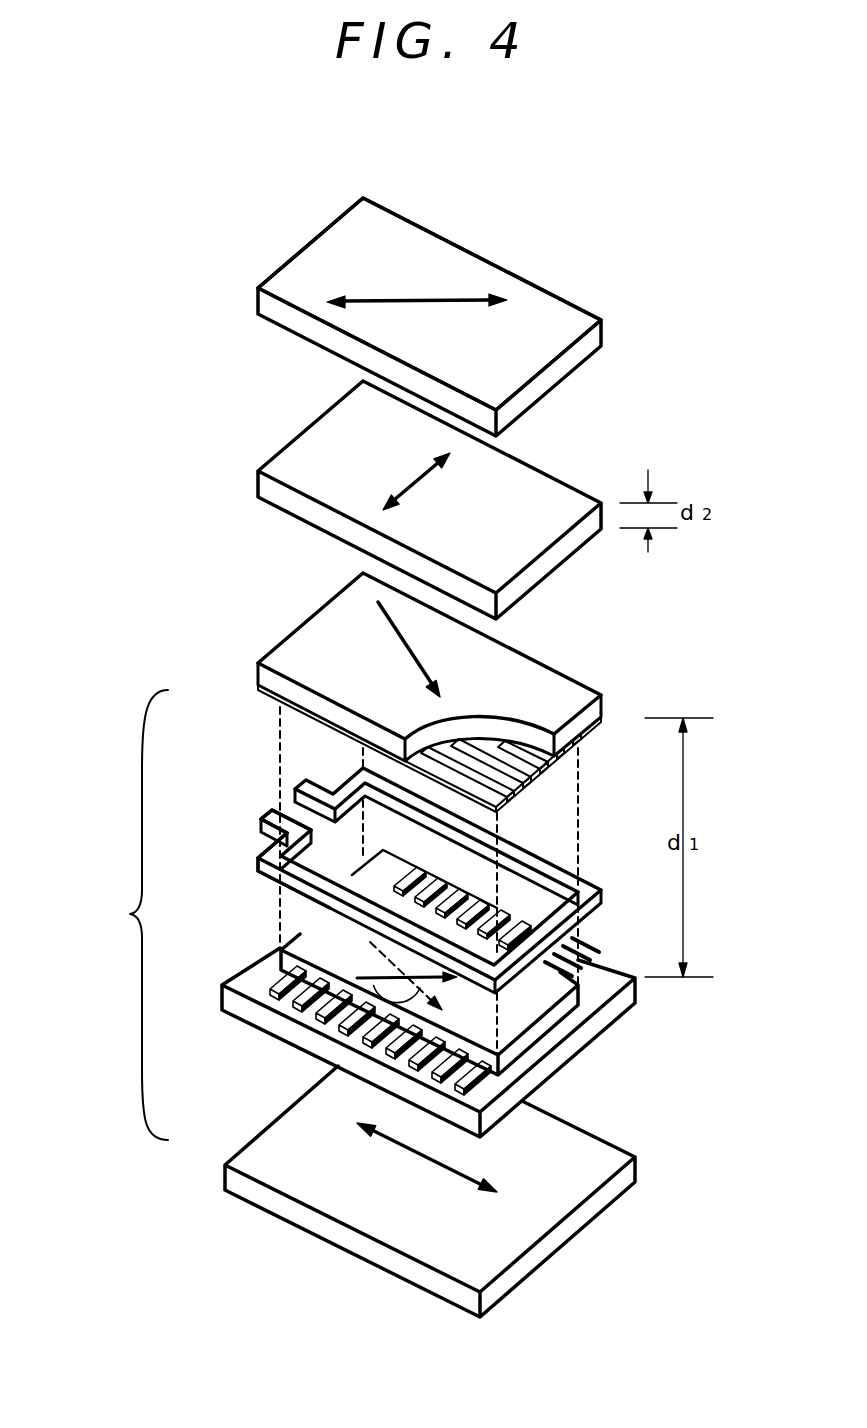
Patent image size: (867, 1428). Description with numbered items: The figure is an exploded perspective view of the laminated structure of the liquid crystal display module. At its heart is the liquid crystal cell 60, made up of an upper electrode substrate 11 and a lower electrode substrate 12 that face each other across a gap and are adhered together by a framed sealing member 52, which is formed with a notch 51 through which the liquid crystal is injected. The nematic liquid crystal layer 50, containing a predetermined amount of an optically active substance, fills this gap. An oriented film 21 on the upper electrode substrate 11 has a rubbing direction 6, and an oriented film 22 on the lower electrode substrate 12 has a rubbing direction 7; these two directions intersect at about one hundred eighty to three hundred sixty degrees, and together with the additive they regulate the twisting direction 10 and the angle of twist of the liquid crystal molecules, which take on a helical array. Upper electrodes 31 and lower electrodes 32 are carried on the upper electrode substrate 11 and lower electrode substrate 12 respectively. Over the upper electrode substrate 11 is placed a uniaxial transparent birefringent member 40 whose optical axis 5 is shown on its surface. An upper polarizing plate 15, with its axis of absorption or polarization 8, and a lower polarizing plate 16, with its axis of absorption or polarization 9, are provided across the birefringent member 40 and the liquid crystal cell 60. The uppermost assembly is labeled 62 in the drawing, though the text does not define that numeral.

The upper optical unit 62 is at (350, 228).
The upper polarizing plate 15 is at (585, 349).
The axis of absorption or polarization of the upper polarizing plate 8 is at (410, 300).
The birefringent member 40 is at (575, 537).
The optical axis of the birefringent member 5 is at (410, 477).
The upper electrode substrate 11 is at (568, 690).
The rubbing direction 6 is at (403, 645).
The upper electrodes 31 is at (550, 773).
The nematic liquid crystal layer 50 is at (320, 757).
The oriented film 21 is at (503, 803).
The notch 51 is at (293, 807).
The framed sealing member 52 is at (300, 868).
The oriented film 22 is at (540, 1005).
The lower electrode substrate 12 is at (575, 1043).
The lower electrodes 32 is at (263, 988).
The rubbing direction 7 is at (385, 990).
The twisting direction 10 is at (395, 1000).
The lower polarizing plate 16 is at (627, 1177).
The axis of absorption or polarization of the lower polarizing plate 9 is at (427, 1162).
The liquid crystal cell 60 is at (88, 935).